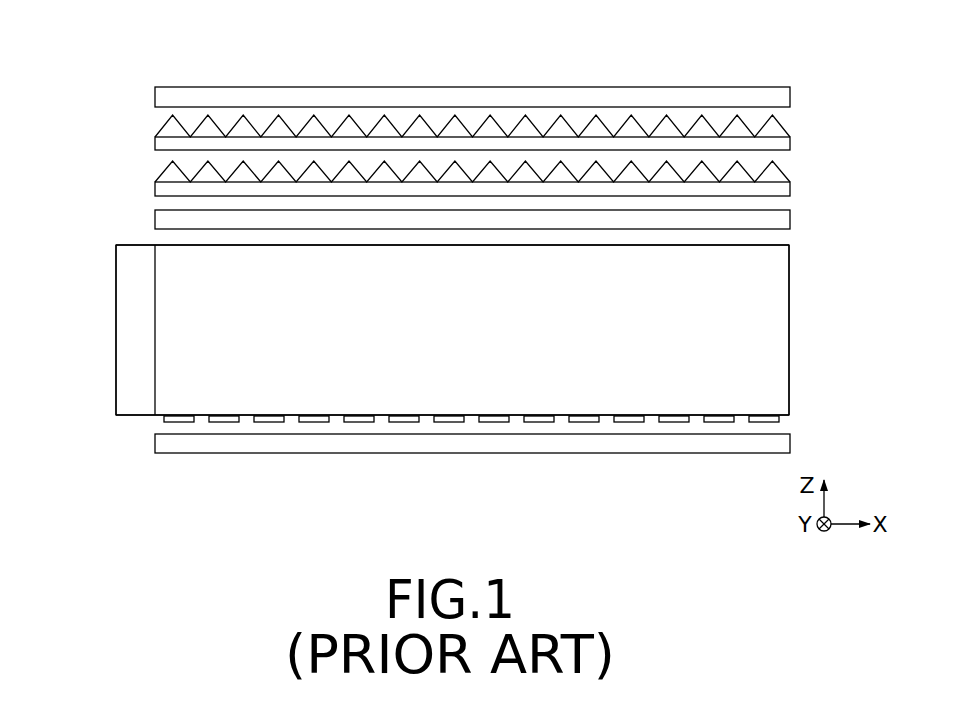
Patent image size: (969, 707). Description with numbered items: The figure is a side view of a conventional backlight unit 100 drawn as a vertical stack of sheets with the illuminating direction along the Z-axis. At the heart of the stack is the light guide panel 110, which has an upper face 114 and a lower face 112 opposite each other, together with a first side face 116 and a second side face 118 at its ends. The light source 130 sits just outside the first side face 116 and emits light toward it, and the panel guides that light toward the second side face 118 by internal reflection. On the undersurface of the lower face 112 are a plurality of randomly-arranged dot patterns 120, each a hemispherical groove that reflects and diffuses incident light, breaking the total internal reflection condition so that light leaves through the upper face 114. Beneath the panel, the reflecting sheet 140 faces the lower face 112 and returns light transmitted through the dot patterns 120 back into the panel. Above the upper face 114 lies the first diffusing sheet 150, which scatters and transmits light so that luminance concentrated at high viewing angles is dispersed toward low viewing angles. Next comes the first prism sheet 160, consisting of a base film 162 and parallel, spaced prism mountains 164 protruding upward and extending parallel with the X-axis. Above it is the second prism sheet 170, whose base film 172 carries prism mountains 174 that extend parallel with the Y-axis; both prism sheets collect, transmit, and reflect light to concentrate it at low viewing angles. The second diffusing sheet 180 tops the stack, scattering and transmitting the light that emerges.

The backlight unit 100 is at (421, 20).
The light guide panel 110 is at (465, 341).
The lower face 112 is at (768, 423).
The upper face 114 is at (753, 247).
The first side face 116 is at (155, 280).
The second side face 118 is at (789, 336).
The dot patterns 120 is at (772, 402).
The light source 130 is at (127, 328).
The reflecting sheet 140 is at (155, 440).
The first diffusing sheet 150 is at (155, 215).
The first prism sheet 160 is at (448, 177).
The base film 162 is at (155, 185).
The prism mountains 164 is at (157, 169).
The second prism sheet 170 is at (455, 133).
The base film 172 is at (155, 147).
The prism mountains 174 is at (157, 125).
The second diffusing sheet 180 is at (155, 94).